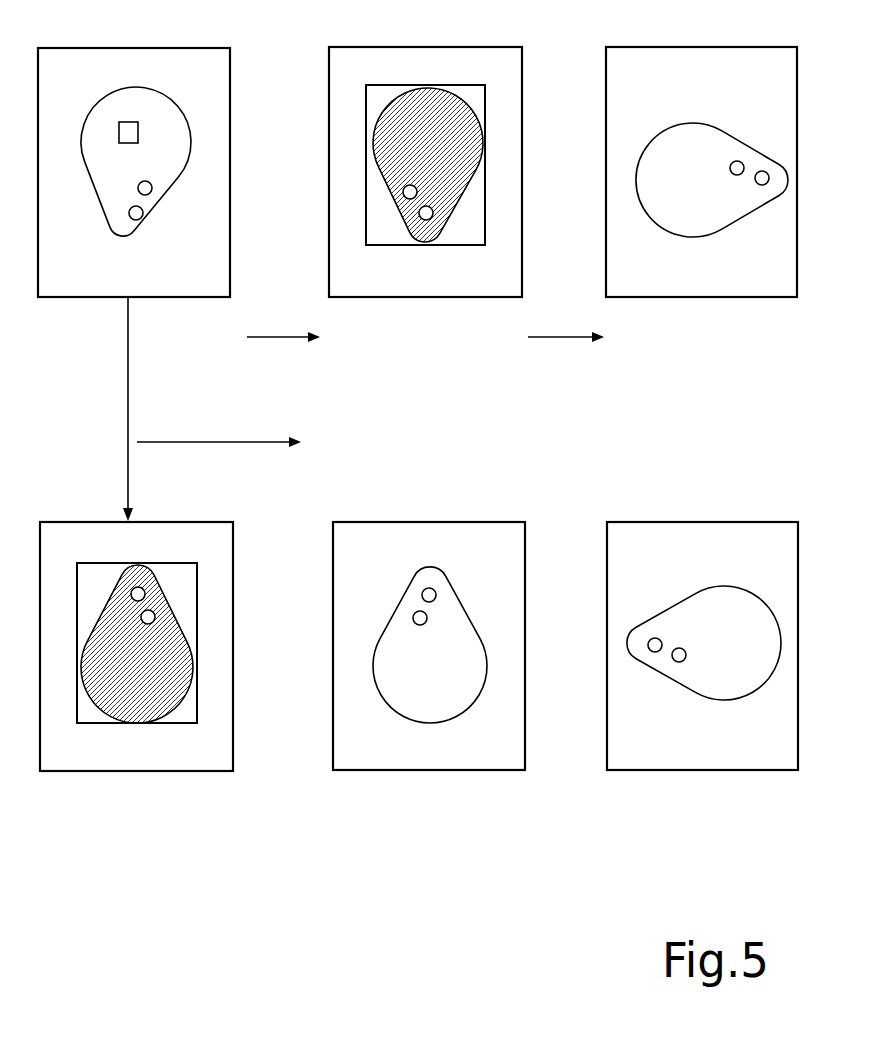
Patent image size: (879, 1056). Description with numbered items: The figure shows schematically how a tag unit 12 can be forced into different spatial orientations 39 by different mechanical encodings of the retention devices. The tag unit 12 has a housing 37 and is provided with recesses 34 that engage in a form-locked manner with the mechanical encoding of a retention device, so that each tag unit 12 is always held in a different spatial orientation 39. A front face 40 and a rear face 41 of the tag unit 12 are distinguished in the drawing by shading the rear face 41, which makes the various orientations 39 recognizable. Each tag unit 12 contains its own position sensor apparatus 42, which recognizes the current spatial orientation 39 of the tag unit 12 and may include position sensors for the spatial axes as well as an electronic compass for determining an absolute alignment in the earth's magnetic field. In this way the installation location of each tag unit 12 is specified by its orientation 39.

The tag unit 12 is at (186, 116).
The position sensor apparatus 42 is at (118, 125).
The housing 37 is at (108, 176).
The front face 40 is at (164, 173).
The recesses 34 is at (149, 194).
The rear face 41 is at (388, 166).
The spatial orientations 39 is at (419, 409).